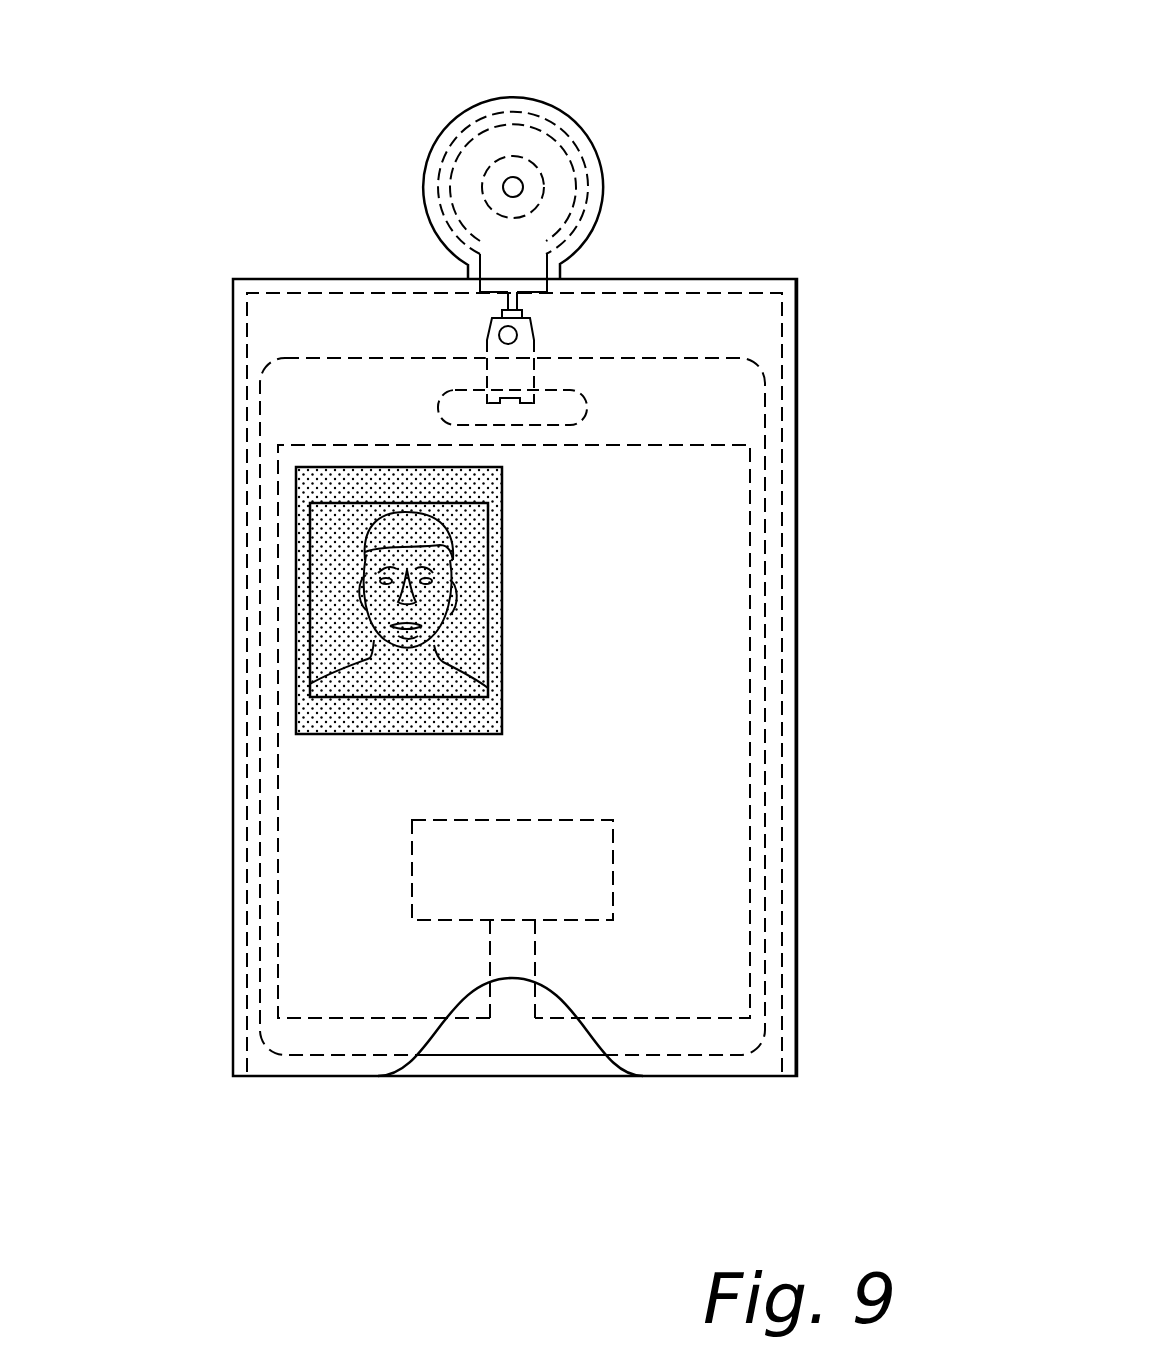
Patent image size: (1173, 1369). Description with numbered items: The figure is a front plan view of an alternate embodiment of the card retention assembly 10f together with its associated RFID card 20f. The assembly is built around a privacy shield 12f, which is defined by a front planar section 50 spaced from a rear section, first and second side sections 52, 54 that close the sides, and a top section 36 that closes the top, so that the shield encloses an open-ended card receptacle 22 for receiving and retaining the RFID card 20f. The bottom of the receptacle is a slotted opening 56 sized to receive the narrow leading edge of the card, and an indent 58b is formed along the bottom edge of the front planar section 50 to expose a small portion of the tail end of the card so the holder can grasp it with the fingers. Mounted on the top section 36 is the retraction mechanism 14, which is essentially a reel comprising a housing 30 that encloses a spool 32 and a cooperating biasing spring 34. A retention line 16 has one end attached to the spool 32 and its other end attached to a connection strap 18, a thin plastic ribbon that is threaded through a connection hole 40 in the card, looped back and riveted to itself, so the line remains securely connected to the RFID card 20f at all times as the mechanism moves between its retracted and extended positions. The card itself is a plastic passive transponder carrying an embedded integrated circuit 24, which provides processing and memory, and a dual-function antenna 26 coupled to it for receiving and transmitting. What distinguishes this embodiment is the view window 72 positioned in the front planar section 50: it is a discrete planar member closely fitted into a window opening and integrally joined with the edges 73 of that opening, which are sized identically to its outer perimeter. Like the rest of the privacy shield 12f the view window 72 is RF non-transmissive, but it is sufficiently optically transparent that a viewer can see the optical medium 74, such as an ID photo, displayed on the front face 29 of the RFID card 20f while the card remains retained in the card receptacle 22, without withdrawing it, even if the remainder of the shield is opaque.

The card retention assembly 10f is at (812, 55).
The privacy shield 12f is at (798, 325).
The retraction mechanism 14 is at (540, 100).
The retention line 16 is at (557, 278).
The connection strap 18 is at (490, 355).
The RFID card 20f is at (735, 470).
The card receptacle 22 is at (782, 934).
The integrated circuit 24 is at (547, 847).
The antenna 26 is at (275, 965).
The front face 29 is at (490, 1035).
The housing 30 is at (432, 152).
The spool 32 is at (550, 155).
The biasing spring 34 is at (490, 165).
The top section 36 is at (710, 279).
The connection hole 40 is at (560, 410).
The front planar section 50 is at (715, 820).
The first side section 52 is at (232, 515).
The second side section 54 is at (800, 630).
The slotted opening 56 is at (358, 1072).
The indent 58b is at (588, 1018).
The view window 72 is at (360, 712).
The edges of the window opening 73 is at (505, 650).
The optical medium 74 is at (348, 627).